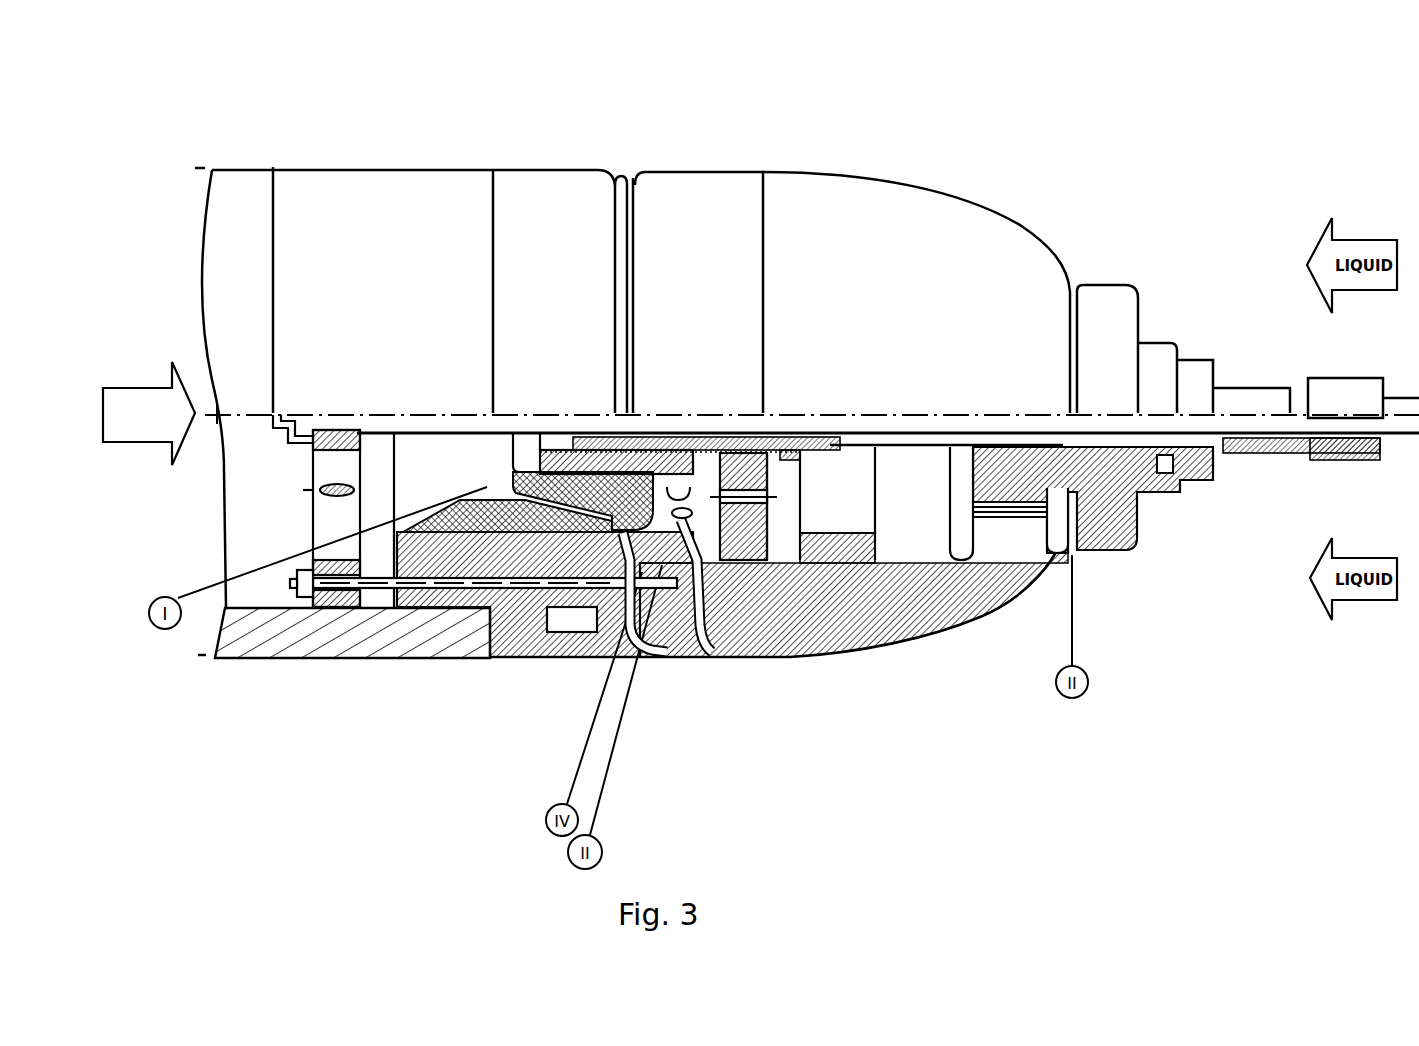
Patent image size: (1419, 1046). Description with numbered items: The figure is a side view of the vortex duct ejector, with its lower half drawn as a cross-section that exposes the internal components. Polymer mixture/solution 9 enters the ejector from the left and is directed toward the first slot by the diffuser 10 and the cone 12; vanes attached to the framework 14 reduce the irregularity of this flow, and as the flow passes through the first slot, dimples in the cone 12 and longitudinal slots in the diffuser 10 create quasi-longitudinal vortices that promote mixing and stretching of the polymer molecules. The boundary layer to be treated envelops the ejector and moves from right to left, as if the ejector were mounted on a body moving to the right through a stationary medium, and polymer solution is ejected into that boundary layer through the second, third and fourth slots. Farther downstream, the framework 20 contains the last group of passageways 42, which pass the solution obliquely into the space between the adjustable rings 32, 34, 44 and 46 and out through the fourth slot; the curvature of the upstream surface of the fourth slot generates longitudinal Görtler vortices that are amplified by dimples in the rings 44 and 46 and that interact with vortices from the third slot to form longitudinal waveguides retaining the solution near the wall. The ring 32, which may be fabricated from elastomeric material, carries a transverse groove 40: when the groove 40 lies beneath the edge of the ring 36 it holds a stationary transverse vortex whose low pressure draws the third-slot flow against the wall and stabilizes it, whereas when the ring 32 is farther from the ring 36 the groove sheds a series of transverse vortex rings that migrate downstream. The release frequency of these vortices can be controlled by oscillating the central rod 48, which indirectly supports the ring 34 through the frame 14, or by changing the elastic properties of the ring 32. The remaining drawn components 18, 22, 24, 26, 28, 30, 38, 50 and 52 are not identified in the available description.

The polymer mixture/solution 9 is at (149, 413).
The diffuser 10 is at (387, 640).
The cone 12 is at (455, 650).
The framework 14 is at (335, 610).
The shaft 18 is at (1249, 446).
The framework 20 is at (808, 660).
The rotor outer wall 22 is at (852, 660).
The pin 24 is at (992, 520).
The groove 26 is at (1010, 600).
The hub 28 is at (1118, 552).
The sleeve 30 is at (771, 660).
The ring 32 is at (649, 660).
The ring 34 is at (674, 660).
The ring 36 is at (737, 660).
The seal 38 is at (757, 660).
The transverse groove 40 is at (629, 176).
The passageways 42 is at (594, 660).
The ring 44 is at (553, 660).
The ring 46 is at (512, 662).
The central rod 48 is at (1292, 430).
The base plate 50 is at (231, 612).
The recess 52 is at (588, 660).